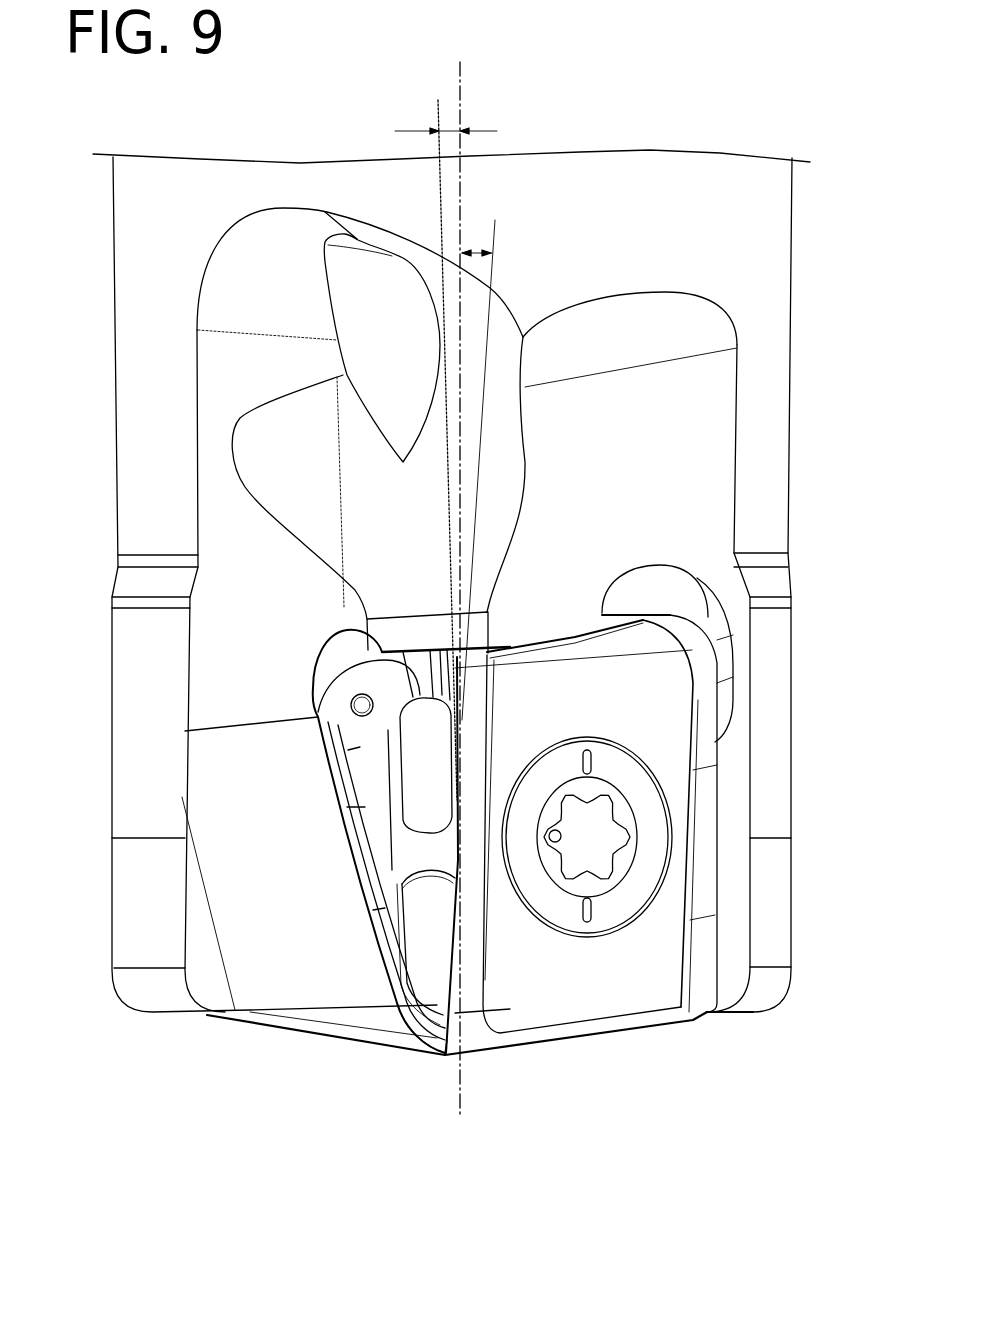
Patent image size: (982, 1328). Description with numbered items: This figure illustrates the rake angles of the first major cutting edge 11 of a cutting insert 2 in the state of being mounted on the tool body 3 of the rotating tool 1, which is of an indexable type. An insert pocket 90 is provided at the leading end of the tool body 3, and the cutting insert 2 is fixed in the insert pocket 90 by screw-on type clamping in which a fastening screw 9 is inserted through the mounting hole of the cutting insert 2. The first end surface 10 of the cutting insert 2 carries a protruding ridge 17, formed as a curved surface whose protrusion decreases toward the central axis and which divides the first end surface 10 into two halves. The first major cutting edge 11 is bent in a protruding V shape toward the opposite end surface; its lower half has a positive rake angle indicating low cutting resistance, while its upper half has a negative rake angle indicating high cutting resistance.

The rotating tool 1 is at (472, 1307).
The cutting insert 2 is at (597, 990).
The tool body 3 is at (158, 386).
The fastening screw 9 is at (605, 815).
The first end surface 10 is at (418, 775).
The first major cutting edge 11 is at (442, 976).
The protruding ridge 17 is at (418, 855).
The insert pocket 90 is at (358, 908).